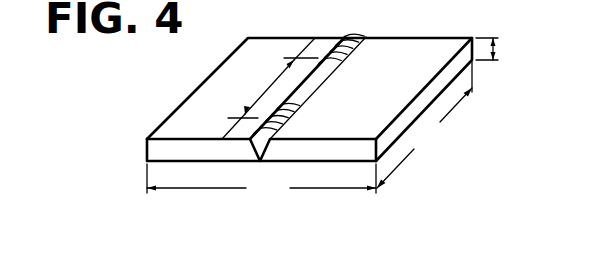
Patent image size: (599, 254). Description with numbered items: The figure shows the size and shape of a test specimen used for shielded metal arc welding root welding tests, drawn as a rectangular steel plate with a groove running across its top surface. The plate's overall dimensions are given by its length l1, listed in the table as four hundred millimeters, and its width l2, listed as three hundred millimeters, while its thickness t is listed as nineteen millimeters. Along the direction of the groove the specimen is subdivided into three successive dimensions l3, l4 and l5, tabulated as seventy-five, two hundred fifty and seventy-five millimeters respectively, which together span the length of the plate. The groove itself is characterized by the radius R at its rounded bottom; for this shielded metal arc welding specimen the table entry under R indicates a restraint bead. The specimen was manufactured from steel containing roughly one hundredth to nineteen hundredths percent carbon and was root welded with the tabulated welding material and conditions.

The test specimen length l1 is at (424, 125).
The test specimen width l2 is at (261, 183).
The specimen dimension l3 is at (227, 125).
The specimen dimension l4 is at (276, 86).
The specimen dimension l5 is at (289, 53).
The groove radius R is at (367, 38).
The test specimen thickness t is at (492, 52).